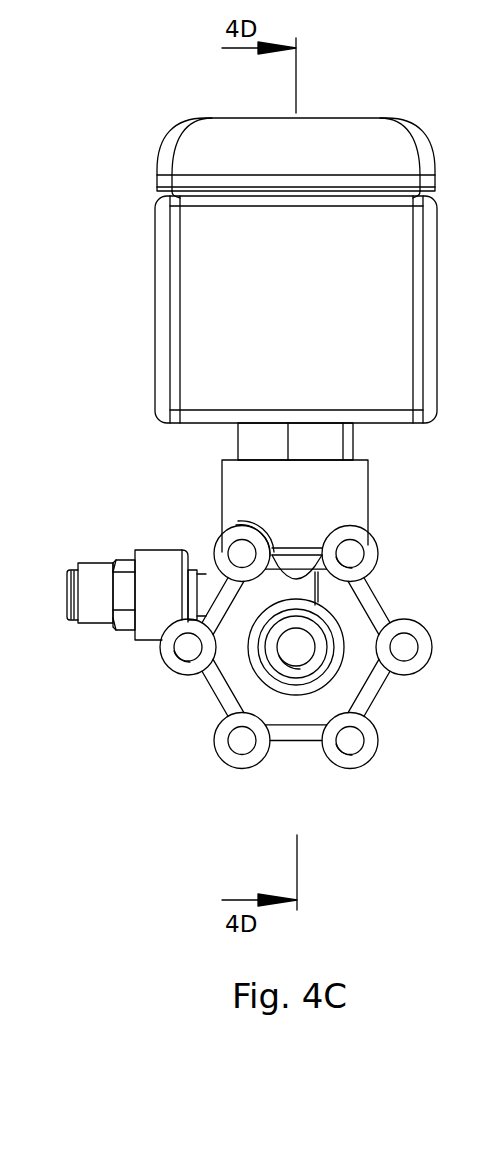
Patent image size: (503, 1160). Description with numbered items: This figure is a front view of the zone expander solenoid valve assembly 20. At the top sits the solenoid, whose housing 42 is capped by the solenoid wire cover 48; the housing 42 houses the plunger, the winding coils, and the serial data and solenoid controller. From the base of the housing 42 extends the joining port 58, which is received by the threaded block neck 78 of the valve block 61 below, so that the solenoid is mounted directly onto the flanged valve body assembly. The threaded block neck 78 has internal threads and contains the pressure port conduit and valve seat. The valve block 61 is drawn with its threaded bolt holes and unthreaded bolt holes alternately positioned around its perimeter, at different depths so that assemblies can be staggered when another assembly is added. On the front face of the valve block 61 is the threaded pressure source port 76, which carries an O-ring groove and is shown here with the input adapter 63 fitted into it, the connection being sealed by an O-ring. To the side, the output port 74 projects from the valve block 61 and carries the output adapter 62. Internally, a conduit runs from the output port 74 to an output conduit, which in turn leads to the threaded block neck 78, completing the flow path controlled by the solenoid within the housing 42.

The zone expander solenoid valve assembly 20 is at (279, 47).
The solenoid wire cover 48 is at (350, 146).
The housing 42 is at (437, 295).
The joining port 58 is at (355, 443).
The threaded block neck 78 is at (368, 497).
The output port 74 is at (157, 550).
The output adapter 62 is at (87, 572).
The threaded pressure source port 76 is at (342, 632).
The input adapter 63 is at (310, 660).
The valve block 61 is at (377, 697).